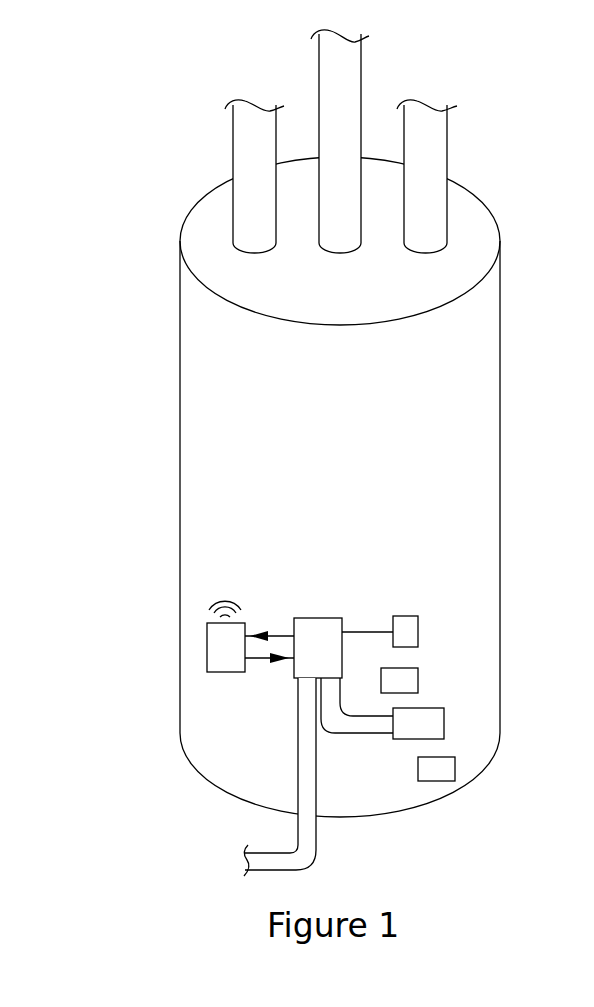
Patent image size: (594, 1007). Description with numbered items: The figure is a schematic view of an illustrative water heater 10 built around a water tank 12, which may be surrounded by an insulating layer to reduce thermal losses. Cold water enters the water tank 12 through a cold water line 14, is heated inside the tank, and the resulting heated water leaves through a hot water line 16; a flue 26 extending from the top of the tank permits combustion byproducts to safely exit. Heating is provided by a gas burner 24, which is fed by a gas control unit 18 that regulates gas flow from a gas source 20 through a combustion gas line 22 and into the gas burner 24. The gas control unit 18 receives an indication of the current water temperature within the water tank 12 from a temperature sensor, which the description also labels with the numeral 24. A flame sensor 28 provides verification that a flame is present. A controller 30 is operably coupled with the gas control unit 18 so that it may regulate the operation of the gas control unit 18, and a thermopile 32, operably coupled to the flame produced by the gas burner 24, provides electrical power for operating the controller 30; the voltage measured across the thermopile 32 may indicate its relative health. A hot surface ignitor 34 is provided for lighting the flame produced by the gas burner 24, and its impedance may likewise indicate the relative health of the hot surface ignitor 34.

The water heater 10 is at (307, 459).
The water tank 12 is at (202, 491).
The cold water line 14 is at (245, 136).
The hot water line 16 is at (440, 139).
The gas control unit 18 is at (318, 618).
The gas source 20 is at (312, 855).
The combustion gas line 22 is at (357, 727).
The gas burner 24 is at (444, 723).
The flue 26 is at (347, 66).
The flame sensor 28 is at (405, 616).
The controller 30 is at (227, 672).
The thermopile 32 is at (418, 680).
The hot surface ignitor 34 is at (455, 767).